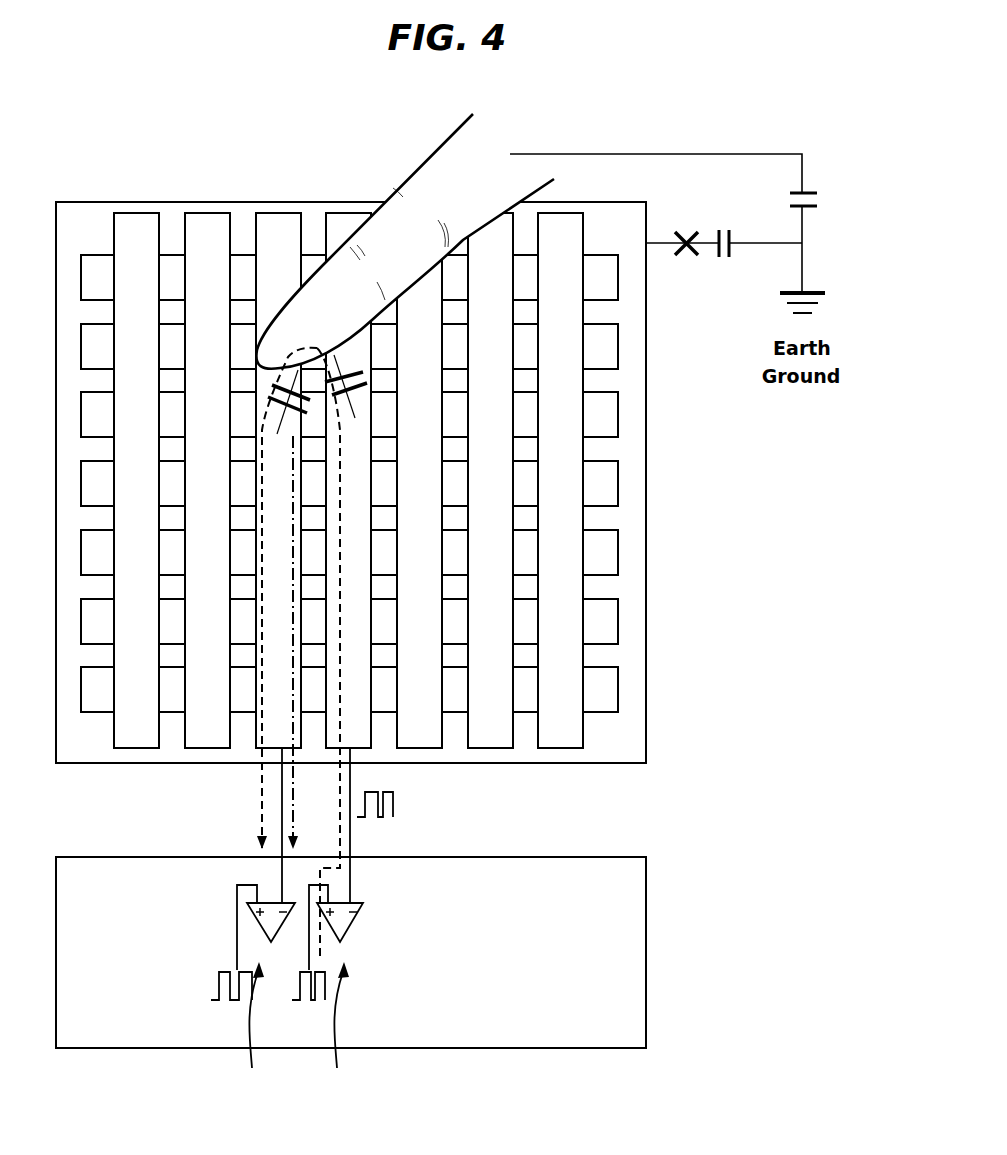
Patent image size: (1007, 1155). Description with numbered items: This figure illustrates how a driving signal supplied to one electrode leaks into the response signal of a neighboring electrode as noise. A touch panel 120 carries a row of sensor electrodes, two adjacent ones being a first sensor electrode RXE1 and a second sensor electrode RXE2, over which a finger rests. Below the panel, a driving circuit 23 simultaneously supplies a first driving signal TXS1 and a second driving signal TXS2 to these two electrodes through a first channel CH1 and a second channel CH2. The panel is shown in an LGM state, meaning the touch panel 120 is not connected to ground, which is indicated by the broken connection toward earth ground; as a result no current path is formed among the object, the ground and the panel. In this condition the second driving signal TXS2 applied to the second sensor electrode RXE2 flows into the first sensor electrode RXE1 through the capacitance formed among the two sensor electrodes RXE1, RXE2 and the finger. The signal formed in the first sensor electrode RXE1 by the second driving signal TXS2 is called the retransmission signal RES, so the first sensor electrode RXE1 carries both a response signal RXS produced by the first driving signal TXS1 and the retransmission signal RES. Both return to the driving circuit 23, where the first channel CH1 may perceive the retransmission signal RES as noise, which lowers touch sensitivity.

The touch panel 120 is at (351, 491).
The driving circuit 23 is at (647, 948).
The first sensor electrode RXE1 is at (262, 213).
The second sensor electrode RXE2 is at (339, 213).
The retransmission signal RES is at (262, 792).
The response signal RXS is at (293, 828).
The first driving signal TXS1 is at (221, 1003).
The second driving signal TXS2 is at (307, 691).
The first channel CH1 is at (249, 1033).
The second channel CH2 is at (333, 1033).